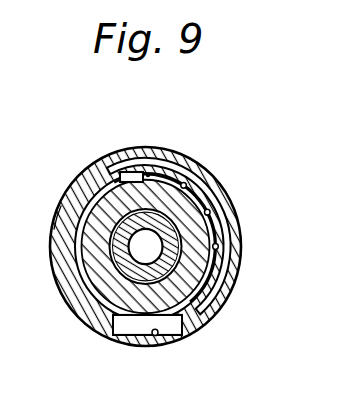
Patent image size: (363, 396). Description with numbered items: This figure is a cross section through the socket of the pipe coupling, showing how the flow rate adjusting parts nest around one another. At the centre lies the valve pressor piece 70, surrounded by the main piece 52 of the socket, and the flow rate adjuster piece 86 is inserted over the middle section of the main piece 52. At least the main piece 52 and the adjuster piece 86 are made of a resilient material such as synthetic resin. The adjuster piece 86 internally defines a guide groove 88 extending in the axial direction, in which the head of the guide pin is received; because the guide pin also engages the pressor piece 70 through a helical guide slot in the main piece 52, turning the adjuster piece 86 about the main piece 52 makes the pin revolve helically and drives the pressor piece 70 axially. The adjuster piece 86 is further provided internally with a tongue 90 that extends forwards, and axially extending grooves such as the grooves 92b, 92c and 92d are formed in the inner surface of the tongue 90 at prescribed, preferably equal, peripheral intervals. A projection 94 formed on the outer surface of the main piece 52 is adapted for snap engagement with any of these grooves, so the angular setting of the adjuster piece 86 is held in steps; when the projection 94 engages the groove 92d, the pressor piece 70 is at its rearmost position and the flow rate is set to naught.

The main piece 52 is at (223, 305).
The valve pressor piece 70 is at (103, 268).
The flow rate adjuster piece 86 is at (58, 208).
The guide groove 88 is at (157, 336).
The tongue 90 is at (173, 161).
The groove 92b is at (190, 182).
The groove 92c is at (211, 213).
The groove 92d is at (219, 247).
The projection 94 is at (147, 172).